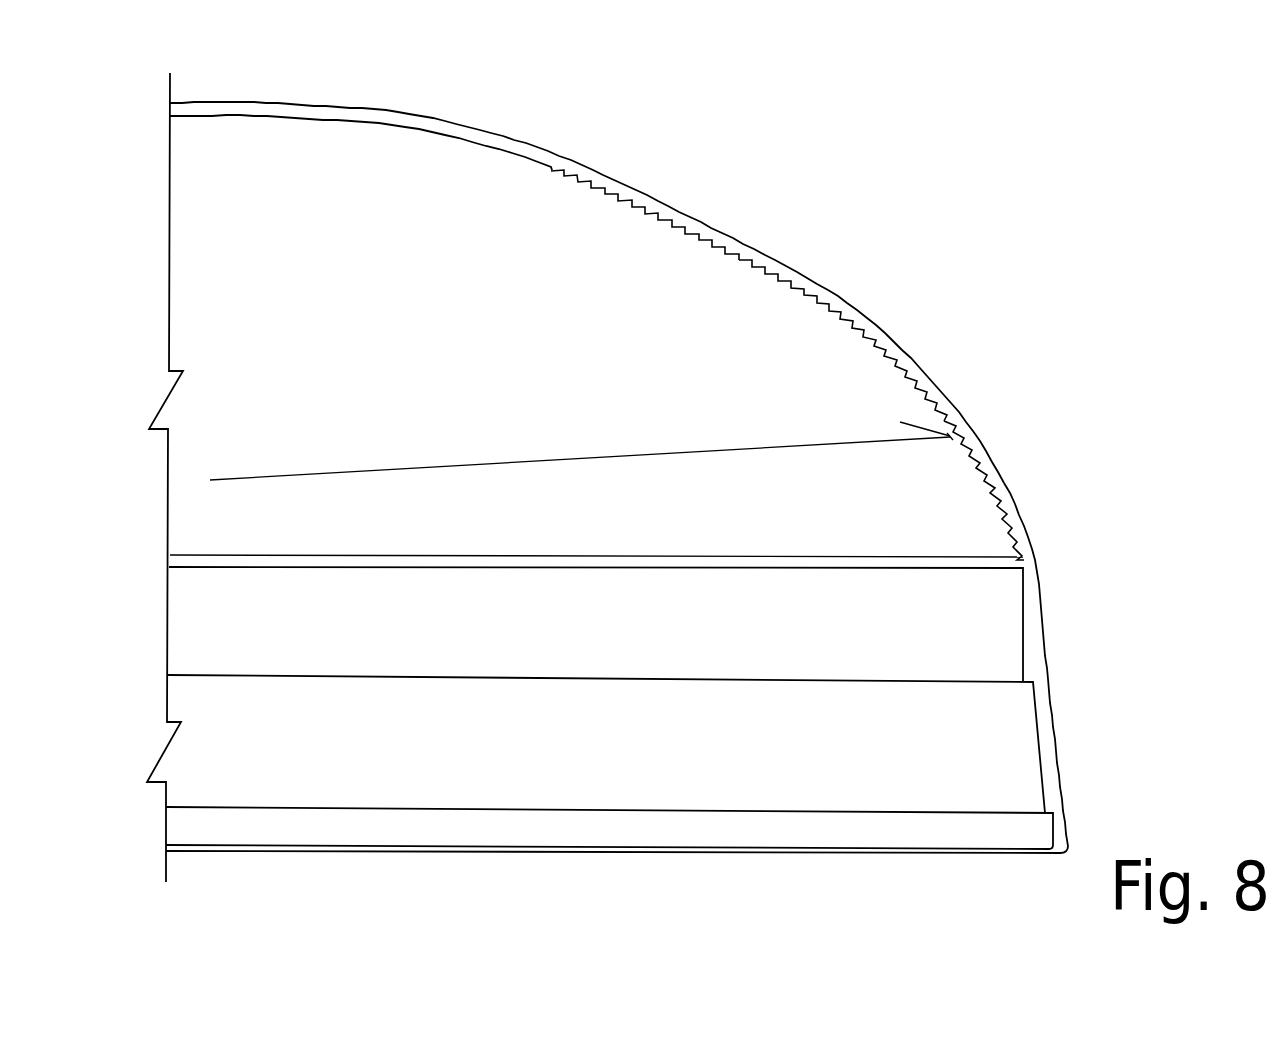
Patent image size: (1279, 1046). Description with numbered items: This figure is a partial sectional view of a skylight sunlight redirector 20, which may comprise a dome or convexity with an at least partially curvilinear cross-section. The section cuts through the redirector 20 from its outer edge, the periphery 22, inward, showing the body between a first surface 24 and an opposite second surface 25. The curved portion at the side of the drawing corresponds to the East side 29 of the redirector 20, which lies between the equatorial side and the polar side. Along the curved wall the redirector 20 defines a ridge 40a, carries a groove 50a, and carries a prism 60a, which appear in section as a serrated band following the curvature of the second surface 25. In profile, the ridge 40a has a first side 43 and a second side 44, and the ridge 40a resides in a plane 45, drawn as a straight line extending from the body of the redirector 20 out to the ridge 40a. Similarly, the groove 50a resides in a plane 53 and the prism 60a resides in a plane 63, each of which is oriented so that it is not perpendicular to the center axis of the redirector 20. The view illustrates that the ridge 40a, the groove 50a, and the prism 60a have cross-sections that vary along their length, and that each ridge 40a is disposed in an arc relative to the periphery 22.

The redirector 20 is at (1195, 177).
The periphery 22 is at (736, 850).
The first surface 24 is at (325, 120).
The second surface 25 is at (557, 153).
The East side 29 is at (1004, 478).
The ridge 40a is at (948, 445).
The first side 43 is at (900, 422).
The second side 44 is at (950, 440).
The plane 45 is at (580, 425).
The groove 50a is at (742, 262).
The plane 53 is at (580, 425).
The prism 60a is at (668, 222).
The plane 63 is at (413, 470).